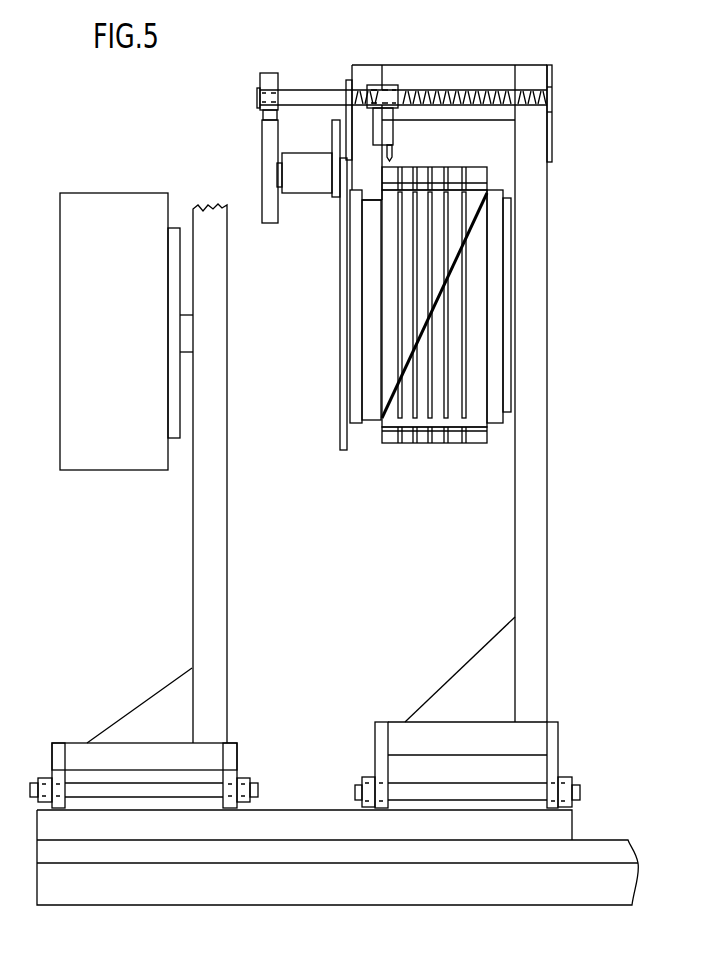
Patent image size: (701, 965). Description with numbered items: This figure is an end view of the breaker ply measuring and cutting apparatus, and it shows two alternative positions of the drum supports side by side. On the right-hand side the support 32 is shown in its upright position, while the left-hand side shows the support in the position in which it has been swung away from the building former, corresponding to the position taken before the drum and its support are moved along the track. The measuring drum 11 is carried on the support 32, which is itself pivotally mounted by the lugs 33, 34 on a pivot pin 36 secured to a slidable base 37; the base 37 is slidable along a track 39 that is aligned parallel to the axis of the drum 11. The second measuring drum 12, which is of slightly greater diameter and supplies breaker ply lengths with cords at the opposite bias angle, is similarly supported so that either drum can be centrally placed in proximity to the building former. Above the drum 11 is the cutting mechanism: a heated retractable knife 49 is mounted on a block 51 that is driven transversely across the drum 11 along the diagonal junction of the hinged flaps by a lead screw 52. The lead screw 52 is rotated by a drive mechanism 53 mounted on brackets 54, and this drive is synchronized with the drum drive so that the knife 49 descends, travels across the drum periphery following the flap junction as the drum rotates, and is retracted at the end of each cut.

The measuring drum 11 is at (455, 435).
The second measuring drum 12 is at (122, 460).
The support 32 is at (537, 575).
The lug 33 is at (378, 748).
The lug 34 is at (553, 751).
The pivot pin 36 is at (410, 790).
The slidable base 37 is at (572, 829).
The track 39 is at (320, 860).
The heated retractable knife 49 is at (395, 147).
The block 51 is at (393, 85).
The lead screw 52 is at (297, 92).
The drive mechanism 53 is at (300, 168).
The bracket 54 is at (348, 73).